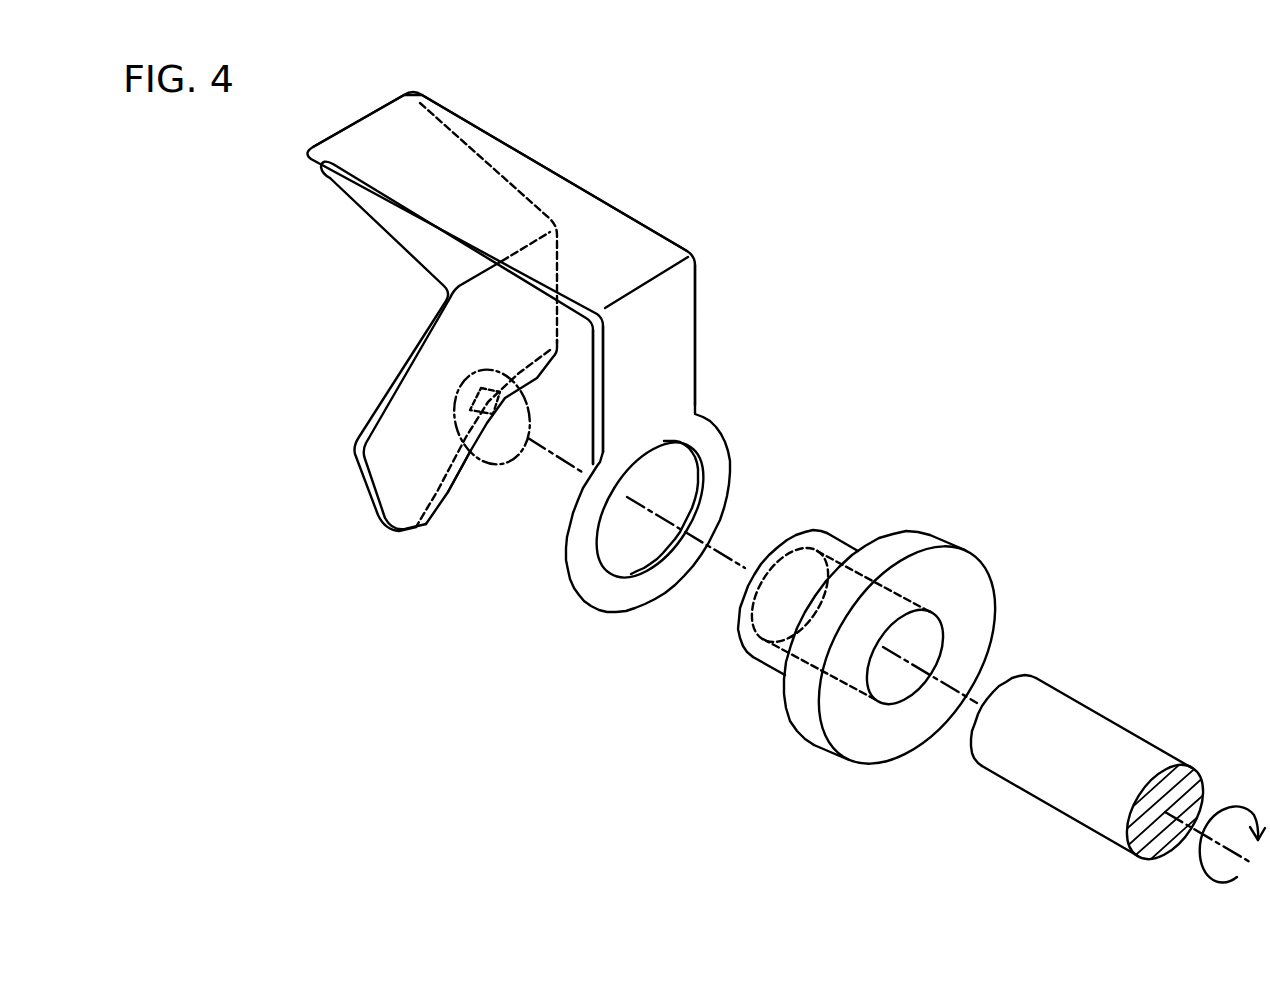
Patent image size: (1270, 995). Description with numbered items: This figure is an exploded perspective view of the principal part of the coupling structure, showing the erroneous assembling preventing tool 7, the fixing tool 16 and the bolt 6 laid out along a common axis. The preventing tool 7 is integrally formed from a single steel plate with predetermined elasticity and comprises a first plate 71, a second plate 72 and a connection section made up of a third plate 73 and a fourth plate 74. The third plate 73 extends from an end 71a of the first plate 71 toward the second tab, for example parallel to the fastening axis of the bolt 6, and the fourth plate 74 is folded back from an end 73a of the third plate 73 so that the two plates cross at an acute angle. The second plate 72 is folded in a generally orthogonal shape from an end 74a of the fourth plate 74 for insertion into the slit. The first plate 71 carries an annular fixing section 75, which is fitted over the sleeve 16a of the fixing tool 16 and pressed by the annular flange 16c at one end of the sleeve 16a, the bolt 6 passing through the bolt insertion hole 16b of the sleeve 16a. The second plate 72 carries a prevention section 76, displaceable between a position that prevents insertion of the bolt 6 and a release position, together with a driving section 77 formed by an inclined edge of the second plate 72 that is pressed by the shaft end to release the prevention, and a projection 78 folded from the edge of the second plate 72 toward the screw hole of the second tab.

The bolt 6 is at (1037, 781).
The erroneous assembling preventing tool 7 is at (617, 195).
The fixing tool 16 is at (872, 733).
The sleeve 16a is at (752, 658).
The bolt insertion hole 16b is at (830, 557).
The annular flange 16c is at (968, 590).
The first plate 71 is at (668, 360).
The end of the first plate 71a is at (665, 302).
The second plate 72 is at (415, 497).
The third plate 73 is at (545, 190).
The end of the third plate 73a is at (382, 135).
The fourth plate 74 is at (398, 222).
The end of the fourth plate 74a is at (433, 243).
The annular fixing section 75 is at (633, 590).
The prevention section 76 is at (470, 428).
The driving section 77 is at (455, 492).
The projection 78 is at (530, 407).